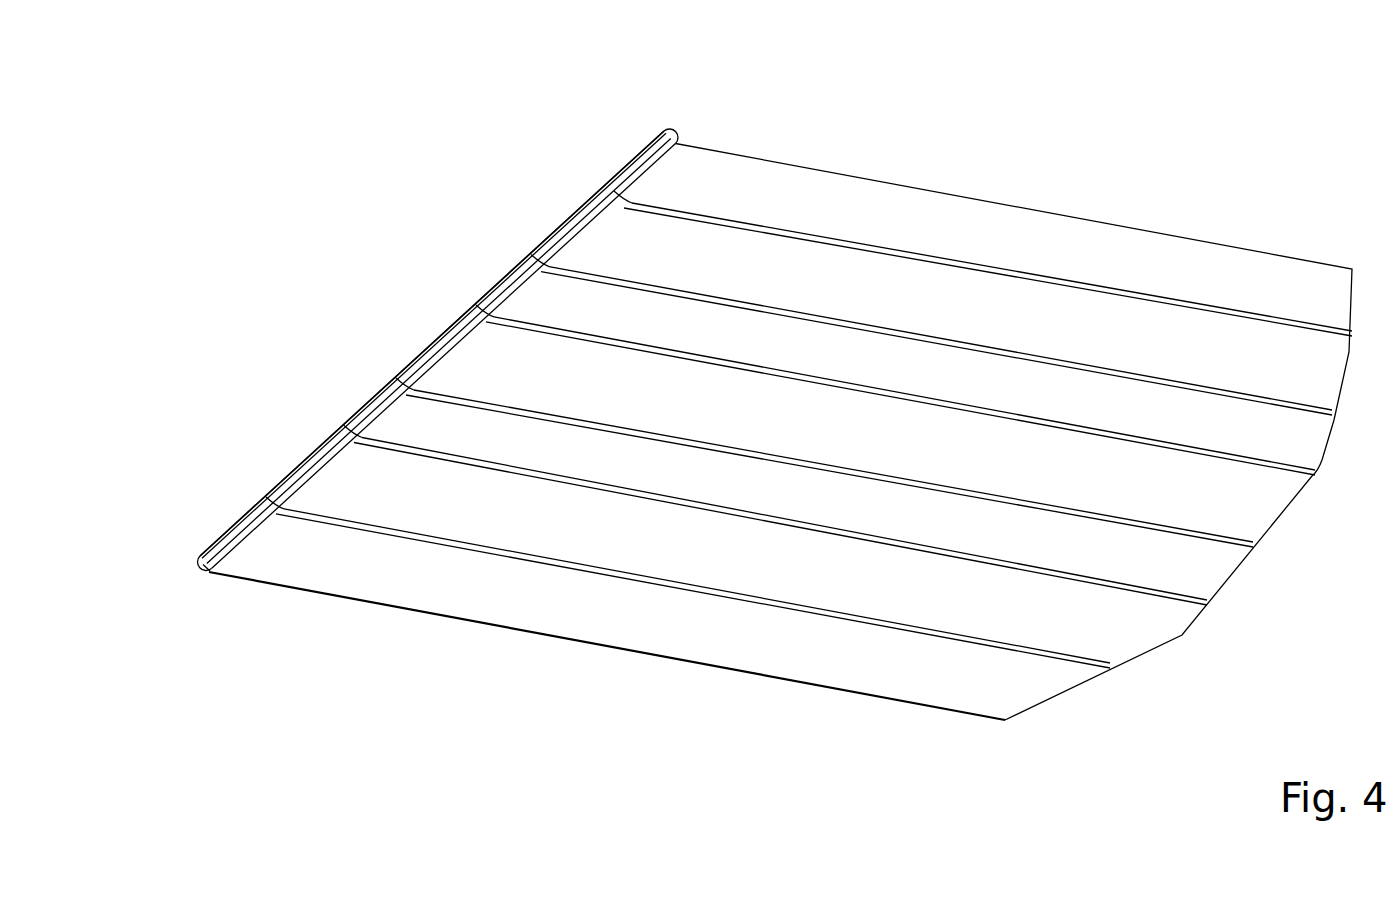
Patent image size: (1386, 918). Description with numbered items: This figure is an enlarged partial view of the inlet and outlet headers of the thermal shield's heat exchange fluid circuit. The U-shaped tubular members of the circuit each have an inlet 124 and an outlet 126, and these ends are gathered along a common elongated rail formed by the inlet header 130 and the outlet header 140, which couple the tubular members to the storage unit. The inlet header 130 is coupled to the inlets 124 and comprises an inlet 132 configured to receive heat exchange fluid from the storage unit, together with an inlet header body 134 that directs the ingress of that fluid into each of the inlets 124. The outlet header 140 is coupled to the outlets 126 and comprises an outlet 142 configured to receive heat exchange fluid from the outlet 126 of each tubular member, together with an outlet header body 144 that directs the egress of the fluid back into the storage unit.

The inlet 124 is at (541, 265).
The outlet 126 is at (620, 190).
The inlet header 130 is at (227, 557).
The inlet 132 is at (208, 567).
The inlet header body 134 is at (593, 218).
The outlet header 140 is at (248, 524).
The outlet 142 is at (200, 566).
The outlet header body 144 is at (433, 347).